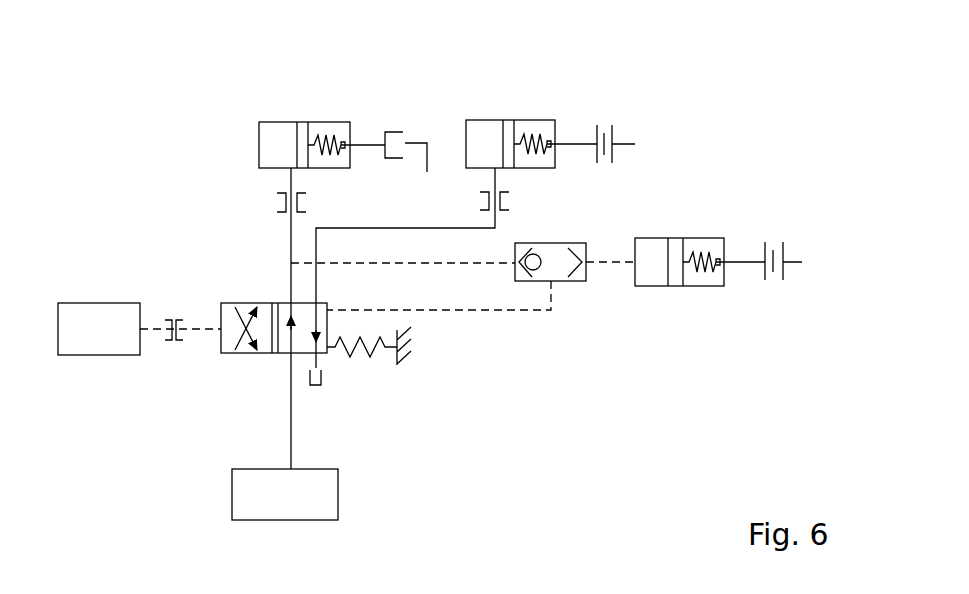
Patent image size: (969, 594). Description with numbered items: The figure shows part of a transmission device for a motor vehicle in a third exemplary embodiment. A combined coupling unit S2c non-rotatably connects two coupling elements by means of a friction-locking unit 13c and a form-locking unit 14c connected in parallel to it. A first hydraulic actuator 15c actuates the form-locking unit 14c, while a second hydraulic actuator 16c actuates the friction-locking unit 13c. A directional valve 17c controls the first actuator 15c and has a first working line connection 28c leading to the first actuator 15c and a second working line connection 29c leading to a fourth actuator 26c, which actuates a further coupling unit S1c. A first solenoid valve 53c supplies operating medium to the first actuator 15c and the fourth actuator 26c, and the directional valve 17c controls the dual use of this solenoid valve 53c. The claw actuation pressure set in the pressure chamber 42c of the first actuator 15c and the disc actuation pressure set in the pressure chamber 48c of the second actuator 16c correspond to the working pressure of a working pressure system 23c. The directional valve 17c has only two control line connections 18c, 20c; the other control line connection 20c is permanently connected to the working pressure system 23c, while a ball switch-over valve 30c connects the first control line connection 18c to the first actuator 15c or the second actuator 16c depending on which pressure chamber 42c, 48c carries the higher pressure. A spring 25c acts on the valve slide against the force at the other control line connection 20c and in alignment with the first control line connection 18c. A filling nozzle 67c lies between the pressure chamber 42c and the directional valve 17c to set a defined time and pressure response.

The first hydraulic actuator 15c is at (268, 108).
The pressure chamber 42c is at (287, 137).
The combined coupling unit S2c is at (413, 105).
The form-locking unit 14c is at (427, 117).
The fourth actuator 26c is at (541, 102).
The further coupling unit S1c is at (641, 114).
The pressure chamber 48c is at (655, 255).
The friction-locking unit 13c is at (788, 236).
The filling nozzle 67c is at (277, 200).
The switch-over valve 30c is at (548, 243).
The working pressure system 23c is at (100, 330).
The directional valve 17c is at (219, 300).
The first working line connection 28c is at (290, 300).
The second working line connection 29c is at (327, 305).
The first control line connection 18c is at (328, 315).
The other control line connection 20c is at (220, 332).
The second hydraulic actuator 16c is at (631, 283).
The spring 25c is at (367, 352).
The first solenoid valve 53c is at (262, 492).